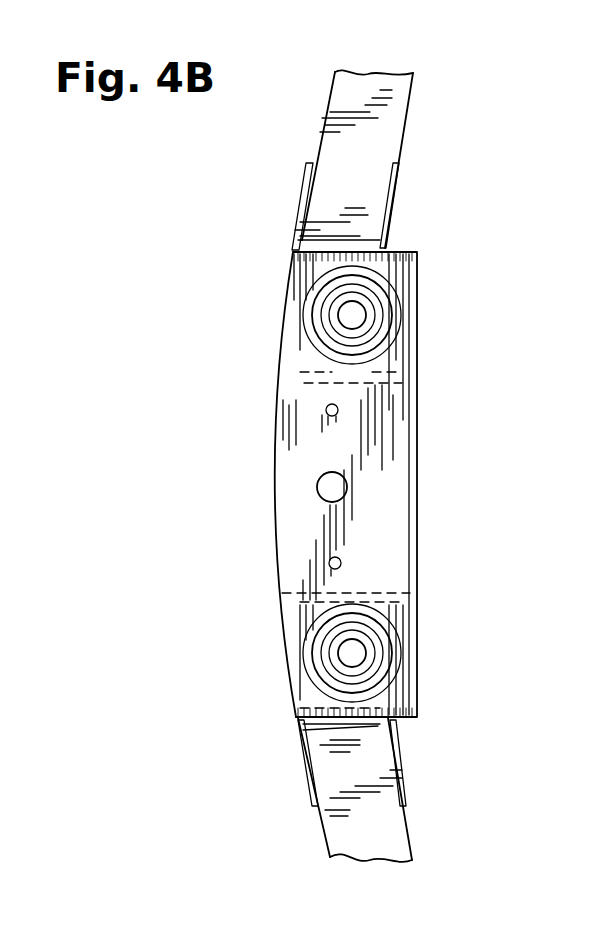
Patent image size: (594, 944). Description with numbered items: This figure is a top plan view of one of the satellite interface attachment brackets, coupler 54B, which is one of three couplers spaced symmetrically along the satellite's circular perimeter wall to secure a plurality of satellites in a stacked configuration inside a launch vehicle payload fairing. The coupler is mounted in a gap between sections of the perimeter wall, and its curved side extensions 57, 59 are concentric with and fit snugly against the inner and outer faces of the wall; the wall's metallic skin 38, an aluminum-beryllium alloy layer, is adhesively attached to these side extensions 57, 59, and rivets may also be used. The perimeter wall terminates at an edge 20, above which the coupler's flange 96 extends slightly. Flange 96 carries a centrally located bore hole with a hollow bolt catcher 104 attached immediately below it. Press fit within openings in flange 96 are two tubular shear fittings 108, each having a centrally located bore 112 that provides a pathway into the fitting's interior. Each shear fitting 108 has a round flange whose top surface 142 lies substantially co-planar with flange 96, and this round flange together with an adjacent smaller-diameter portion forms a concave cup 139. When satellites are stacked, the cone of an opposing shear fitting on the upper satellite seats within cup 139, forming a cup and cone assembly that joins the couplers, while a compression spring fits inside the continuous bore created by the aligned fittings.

The edge of perimeter wall 20 is at (378, 97).
The metallic skin 38 is at (317, 143).
The curved side extension 57 is at (293, 218).
The curved side extension 59 is at (302, 768).
The coupler 54B is at (212, 486).
The flange 96 is at (402, 412).
The hollow bolt catcher 104 is at (347, 488).
The tubular shear fitting 108 is at (405, 355).
The bore 112 is at (348, 318).
The cup 139 is at (330, 350).
The top surface of round flange 142 is at (395, 320).